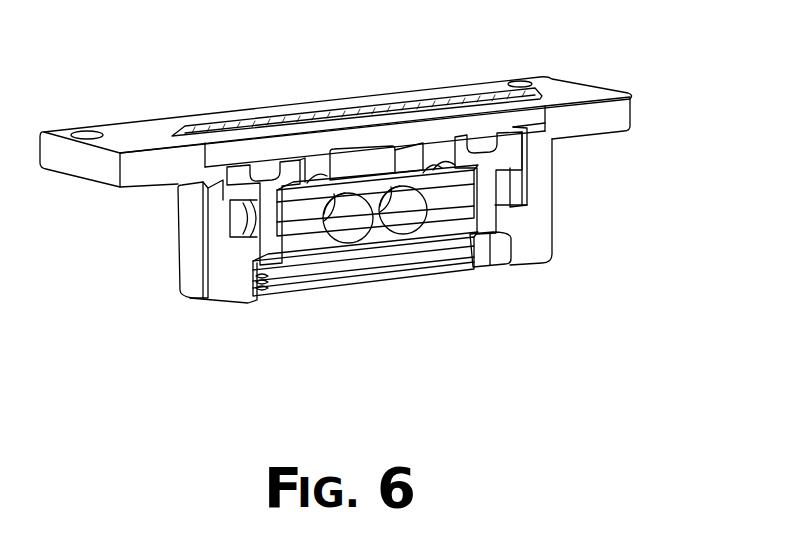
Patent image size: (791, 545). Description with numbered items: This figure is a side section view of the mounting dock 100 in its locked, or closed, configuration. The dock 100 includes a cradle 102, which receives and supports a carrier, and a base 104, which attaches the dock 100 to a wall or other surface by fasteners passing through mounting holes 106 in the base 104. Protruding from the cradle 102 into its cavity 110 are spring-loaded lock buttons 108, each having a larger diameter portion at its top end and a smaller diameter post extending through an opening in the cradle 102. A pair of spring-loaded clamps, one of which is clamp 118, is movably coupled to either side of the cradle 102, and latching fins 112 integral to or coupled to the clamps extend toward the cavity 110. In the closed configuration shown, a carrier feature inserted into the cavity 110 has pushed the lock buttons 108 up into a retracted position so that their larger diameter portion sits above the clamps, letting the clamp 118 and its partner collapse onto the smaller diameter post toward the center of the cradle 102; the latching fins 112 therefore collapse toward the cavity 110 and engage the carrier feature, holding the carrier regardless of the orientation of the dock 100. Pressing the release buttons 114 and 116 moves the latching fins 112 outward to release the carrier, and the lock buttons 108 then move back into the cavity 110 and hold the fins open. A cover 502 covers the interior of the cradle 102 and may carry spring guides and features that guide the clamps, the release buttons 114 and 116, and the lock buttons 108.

The mounting dock 100 is at (146, 50).
The cradle 102 is at (550, 186).
The base 104 is at (602, 85).
The mounting holes 106 is at (513, 78).
The lock buttons 108 is at (270, 238).
The cavity 110 is at (513, 260).
The latching fins 112 is at (418, 270).
The release button 114 is at (412, 274).
The release button 116 is at (418, 268).
The spring-loaded clamp 118 is at (372, 190).
The cover 502 is at (235, 124).